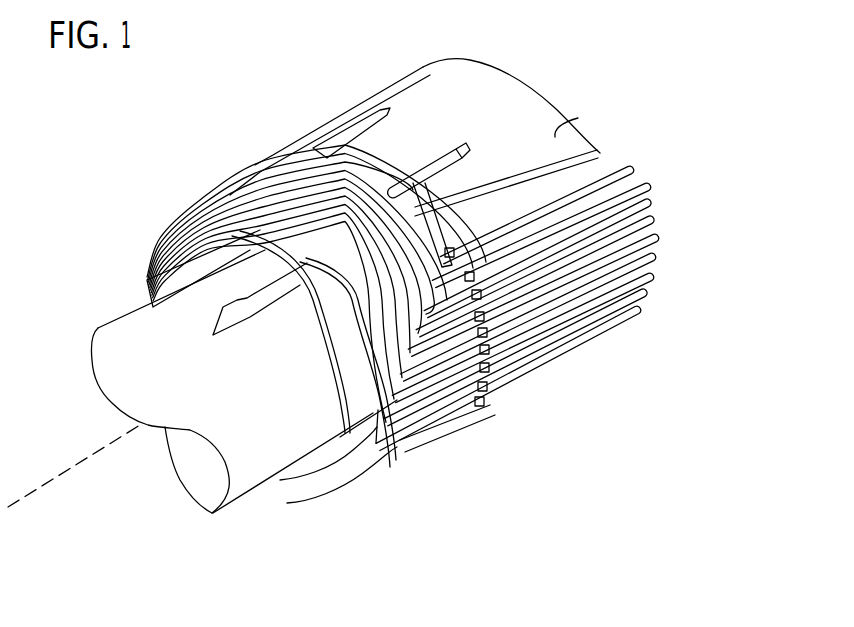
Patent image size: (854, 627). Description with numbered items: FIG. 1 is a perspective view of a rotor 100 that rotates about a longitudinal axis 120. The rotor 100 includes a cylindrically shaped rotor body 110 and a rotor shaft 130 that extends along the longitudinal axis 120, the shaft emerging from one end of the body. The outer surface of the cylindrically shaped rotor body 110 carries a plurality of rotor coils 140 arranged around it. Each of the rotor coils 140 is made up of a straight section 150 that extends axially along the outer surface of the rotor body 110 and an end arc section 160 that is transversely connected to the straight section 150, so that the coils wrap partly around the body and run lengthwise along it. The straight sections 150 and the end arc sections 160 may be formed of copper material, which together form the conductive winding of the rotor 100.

The rotor 100 is at (200, 163).
The cylindrically shaped rotor body 110 is at (578, 120).
The longitudinal axis 120 is at (28, 495).
The rotor shaft 130 is at (263, 433).
The rotor coils 140 is at (630, 180).
The straight section 150 is at (442, 345).
The end arc section 160 is at (425, 452).